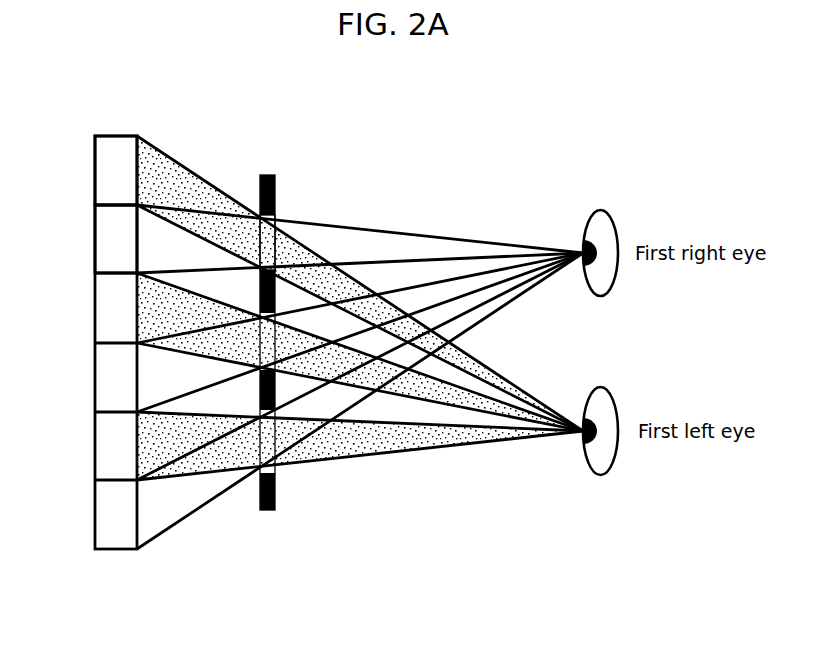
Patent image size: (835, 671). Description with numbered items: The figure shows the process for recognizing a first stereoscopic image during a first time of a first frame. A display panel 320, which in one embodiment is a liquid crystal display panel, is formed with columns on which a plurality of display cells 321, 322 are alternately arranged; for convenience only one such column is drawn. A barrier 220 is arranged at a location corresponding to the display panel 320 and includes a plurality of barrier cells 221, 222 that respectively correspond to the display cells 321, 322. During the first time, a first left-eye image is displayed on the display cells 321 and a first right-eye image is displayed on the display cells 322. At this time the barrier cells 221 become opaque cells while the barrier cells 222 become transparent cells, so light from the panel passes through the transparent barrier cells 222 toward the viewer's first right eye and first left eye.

The display panel 320 is at (119, 560).
The display cells 321 is at (95, 173).
The display cells 322 is at (95, 243).
The barrier 220 is at (270, 521).
The barrier cells 221 is at (269, 175).
The barrier cells 222 is at (275, 218).